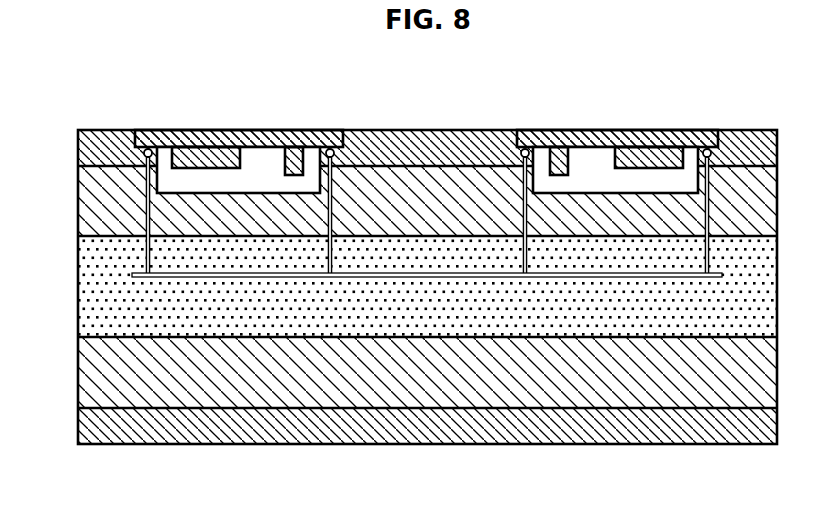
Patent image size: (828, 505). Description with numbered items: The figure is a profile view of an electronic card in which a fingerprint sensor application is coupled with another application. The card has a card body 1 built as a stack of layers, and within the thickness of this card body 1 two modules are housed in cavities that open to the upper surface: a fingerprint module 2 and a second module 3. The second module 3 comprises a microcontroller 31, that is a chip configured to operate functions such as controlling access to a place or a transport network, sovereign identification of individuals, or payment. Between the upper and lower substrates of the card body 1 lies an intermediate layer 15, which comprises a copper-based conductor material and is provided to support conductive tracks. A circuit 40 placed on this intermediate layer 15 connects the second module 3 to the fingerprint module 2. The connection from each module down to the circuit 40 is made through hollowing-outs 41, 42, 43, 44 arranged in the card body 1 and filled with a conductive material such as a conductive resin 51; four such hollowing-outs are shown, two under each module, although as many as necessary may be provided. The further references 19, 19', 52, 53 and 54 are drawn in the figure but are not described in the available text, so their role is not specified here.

The card body 1 is at (421, 275).
The fingerprint module 2 is at (615, 170).
The second module 3 is at (240, 164).
The intermediate layer 15 is at (103, 283).
The cavity 19 is at (615, 138).
The cavity 19' is at (238, 136).
The microcontroller 31 is at (307, 133).
The circuit 40 is at (455, 278).
The hollowing-out 41 is at (520, 197).
The hollowing-out 42 is at (711, 196).
The hollowing-out 43 is at (146, 196).
The hollowing-out 44 is at (333, 193).
The conductive resin 51 is at (518, 217).
The contact 52 is at (710, 217).
The contact 53 is at (336, 217).
The contact 54 is at (128, 192).